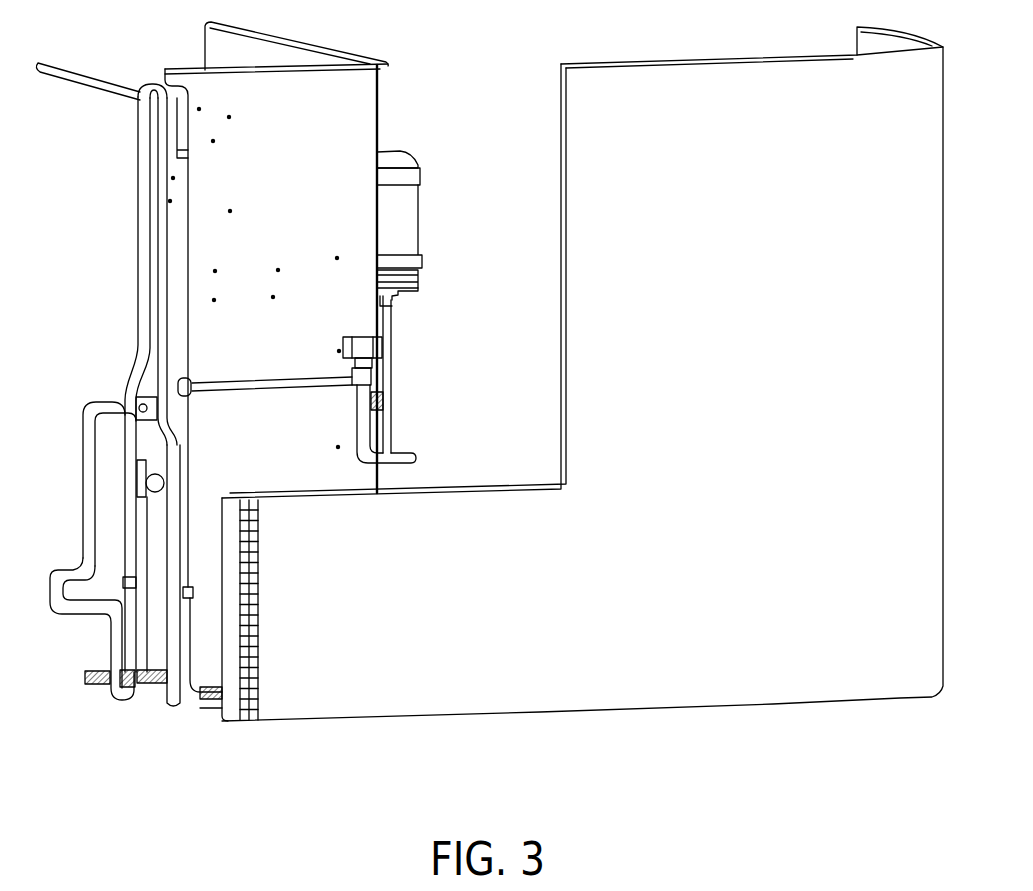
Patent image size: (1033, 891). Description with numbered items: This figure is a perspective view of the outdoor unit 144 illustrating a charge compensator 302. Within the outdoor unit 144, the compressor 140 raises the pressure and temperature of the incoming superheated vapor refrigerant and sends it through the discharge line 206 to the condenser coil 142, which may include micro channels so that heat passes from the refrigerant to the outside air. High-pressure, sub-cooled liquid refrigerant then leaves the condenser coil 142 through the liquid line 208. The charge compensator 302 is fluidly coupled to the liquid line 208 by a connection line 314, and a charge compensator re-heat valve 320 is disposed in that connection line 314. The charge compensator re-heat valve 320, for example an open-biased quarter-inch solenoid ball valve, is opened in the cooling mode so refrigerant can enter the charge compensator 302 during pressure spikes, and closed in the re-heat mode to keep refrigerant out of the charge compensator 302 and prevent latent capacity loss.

The compressor 140 is at (155, 572).
The condenser coil 142 is at (637, 125).
The outdoor unit 144 is at (487, 109).
The discharge line 206 is at (140, 163).
The liquid line 208 is at (183, 542).
The charge compensator 302 is at (402, 212).
The connection line 314 is at (242, 380).
The charge compensator re-heat valve 320 is at (372, 378).